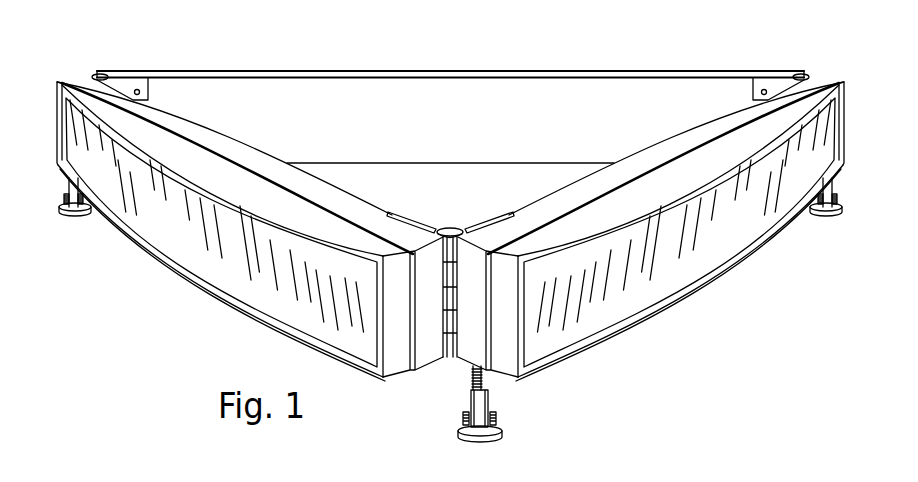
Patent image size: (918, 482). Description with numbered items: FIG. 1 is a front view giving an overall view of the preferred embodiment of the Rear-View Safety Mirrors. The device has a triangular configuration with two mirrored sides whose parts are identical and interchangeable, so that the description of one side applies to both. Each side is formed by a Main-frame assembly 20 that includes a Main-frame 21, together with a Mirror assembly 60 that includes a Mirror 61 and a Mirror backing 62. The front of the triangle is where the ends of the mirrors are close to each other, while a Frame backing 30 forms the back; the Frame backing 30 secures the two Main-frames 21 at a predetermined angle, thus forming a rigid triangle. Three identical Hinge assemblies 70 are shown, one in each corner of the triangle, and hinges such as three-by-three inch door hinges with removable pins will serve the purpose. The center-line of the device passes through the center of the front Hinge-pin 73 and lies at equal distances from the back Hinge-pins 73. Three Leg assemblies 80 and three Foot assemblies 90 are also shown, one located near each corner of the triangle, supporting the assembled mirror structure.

The main-frame assembly 20 is at (238, 133).
The main-frame 21 is at (268, 155).
The frame backing 30 is at (524, 70).
The mirror assembly 60 is at (207, 315).
The mirror 61 is at (178, 247).
The mirror backing 62 is at (396, 378).
The hinge assembly 70 is at (155, 97).
The hinge-pin 73 is at (96, 76).
The leg assembly 80 is at (462, 384).
The foot assembly 90 is at (73, 220).